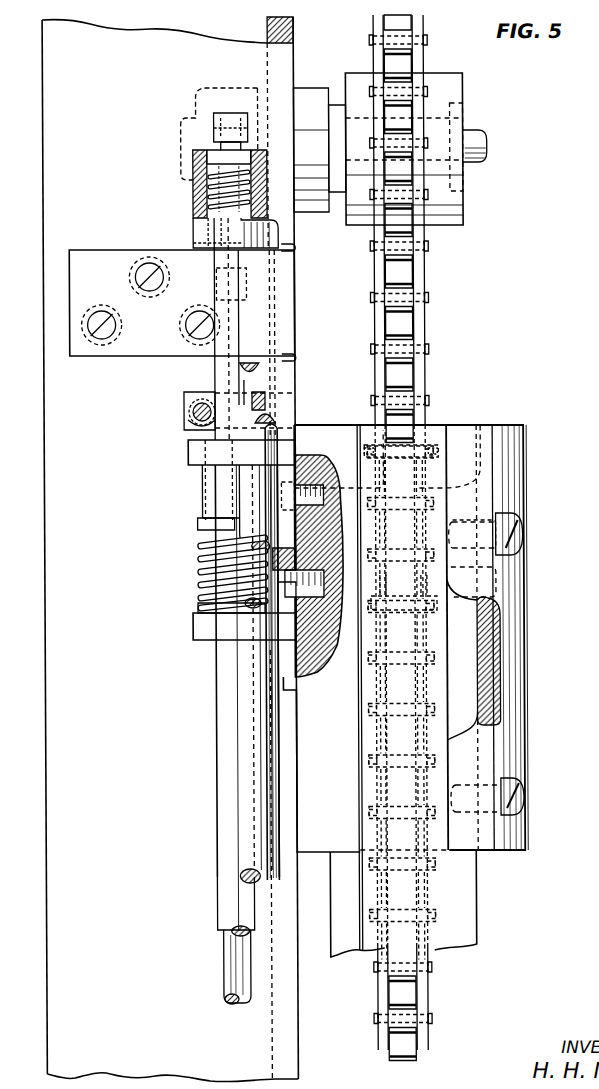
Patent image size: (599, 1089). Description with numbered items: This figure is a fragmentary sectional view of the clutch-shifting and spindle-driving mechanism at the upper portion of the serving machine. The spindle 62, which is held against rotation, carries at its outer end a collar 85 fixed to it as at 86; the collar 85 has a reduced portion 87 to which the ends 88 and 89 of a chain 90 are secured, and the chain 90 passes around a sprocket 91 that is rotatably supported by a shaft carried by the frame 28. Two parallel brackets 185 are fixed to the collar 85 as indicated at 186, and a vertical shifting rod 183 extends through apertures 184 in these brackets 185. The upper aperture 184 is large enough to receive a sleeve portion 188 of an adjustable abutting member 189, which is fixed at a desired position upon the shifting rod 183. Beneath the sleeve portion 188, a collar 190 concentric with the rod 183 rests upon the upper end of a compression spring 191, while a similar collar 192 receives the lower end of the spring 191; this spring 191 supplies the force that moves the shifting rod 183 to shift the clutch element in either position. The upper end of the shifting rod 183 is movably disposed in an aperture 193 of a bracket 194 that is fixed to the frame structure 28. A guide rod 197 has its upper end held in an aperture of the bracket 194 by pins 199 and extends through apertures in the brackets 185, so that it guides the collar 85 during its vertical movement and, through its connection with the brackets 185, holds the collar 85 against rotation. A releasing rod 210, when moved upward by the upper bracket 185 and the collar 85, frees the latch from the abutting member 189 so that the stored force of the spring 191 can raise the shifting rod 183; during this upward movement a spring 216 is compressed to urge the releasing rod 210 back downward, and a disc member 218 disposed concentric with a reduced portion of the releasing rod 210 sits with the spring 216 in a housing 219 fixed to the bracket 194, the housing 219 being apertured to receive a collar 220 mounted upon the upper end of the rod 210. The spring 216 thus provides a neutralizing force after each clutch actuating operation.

The frame 28 is at (42, 771).
The spindle 62 is at (467, 900).
The collar 85 is at (521, 678).
The fixing means 86 is at (521, 533).
The reduced portion 87 is at (440, 567).
The chain end 88 is at (432, 567).
The chain end 89 is at (433, 442).
The chain 90 is at (423, 337).
The sprocket 91 is at (428, 78).
The shifting rod 183 is at (214, 851).
The aperture 184 is at (198, 467).
The bracket 185 is at (187, 455).
The fixing means 186 is at (315, 534).
The sleeve portion 188 is at (204, 499).
The adjustable abutting member 189 is at (182, 406).
The collar 190 is at (197, 529).
The compression spring 191 is at (199, 562).
The collar 192 is at (197, 608).
The aperture 193 is at (220, 277).
The bracket 194 is at (287, 333).
The guide rod 197 is at (280, 430).
The pin 199 is at (296, 248).
The releasing rod 210 is at (220, 965).
The spring 216 is at (207, 196).
The disc member 218 is at (192, 168).
The housing 219 is at (193, 226).
The collar 220 is at (232, 113).